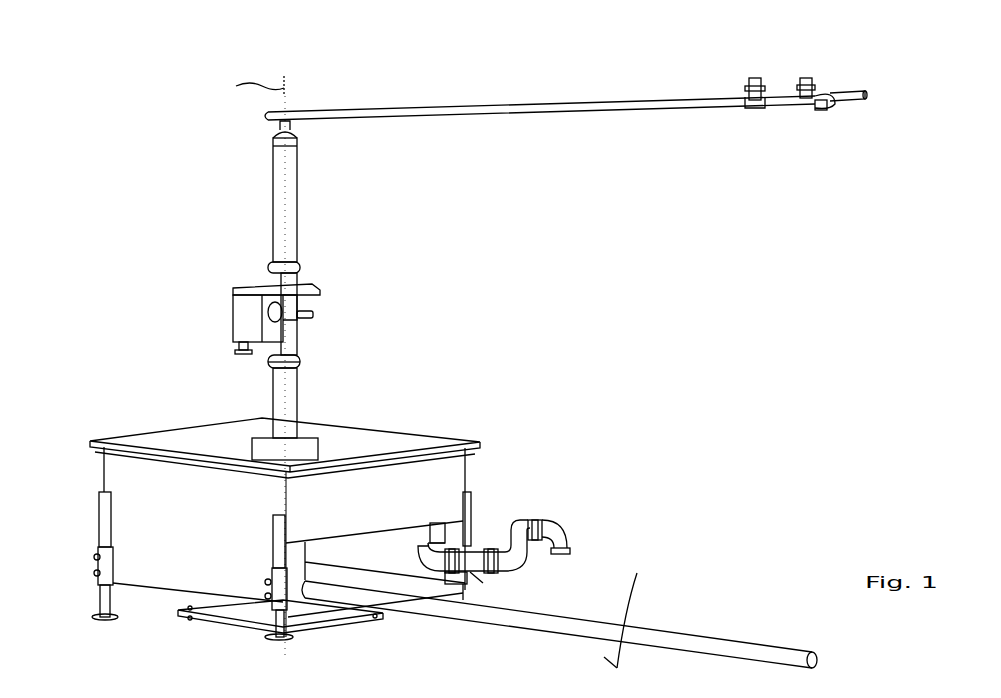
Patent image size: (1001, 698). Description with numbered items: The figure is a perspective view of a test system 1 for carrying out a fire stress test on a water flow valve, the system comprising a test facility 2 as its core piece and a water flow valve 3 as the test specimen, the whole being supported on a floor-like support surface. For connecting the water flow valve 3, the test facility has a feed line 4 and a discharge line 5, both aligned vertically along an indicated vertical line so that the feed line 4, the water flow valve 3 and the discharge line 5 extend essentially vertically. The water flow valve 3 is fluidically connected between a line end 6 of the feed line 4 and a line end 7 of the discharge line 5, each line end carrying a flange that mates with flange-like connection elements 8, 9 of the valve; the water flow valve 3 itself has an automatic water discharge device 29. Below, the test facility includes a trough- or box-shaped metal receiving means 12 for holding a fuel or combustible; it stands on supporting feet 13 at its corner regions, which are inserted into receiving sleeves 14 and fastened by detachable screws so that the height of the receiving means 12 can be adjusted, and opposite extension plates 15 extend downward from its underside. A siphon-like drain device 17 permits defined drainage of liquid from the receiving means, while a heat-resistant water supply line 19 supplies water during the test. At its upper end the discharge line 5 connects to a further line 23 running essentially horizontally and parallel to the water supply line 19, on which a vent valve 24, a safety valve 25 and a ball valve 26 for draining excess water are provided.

The test system 1 is at (138, 100).
The test facility 2 is at (222, 212).
The water flow valve 3 is at (232, 305).
The feed line 4 is at (297, 401).
The discharge line 5 is at (300, 214).
The line end of the feed line 6 is at (300, 366).
The line end of the discharge line 7 is at (298, 263).
The connection element 8 is at (300, 357).
The connection element 9 is at (296, 273).
The receiving means 12 is at (97, 476).
The supporting feet 13 is at (100, 602).
The receiving sleeves 14 is at (98, 549).
The extension plates 15 is at (160, 565).
The drain device 17 is at (525, 522).
The water supply line 19 is at (686, 645).
The further line 23 is at (512, 100).
The vent valve 24 is at (752, 78).
The safety valve 25 is at (806, 78).
The ball valve 26 is at (829, 84).
The automatic water discharge device 29 is at (233, 351).